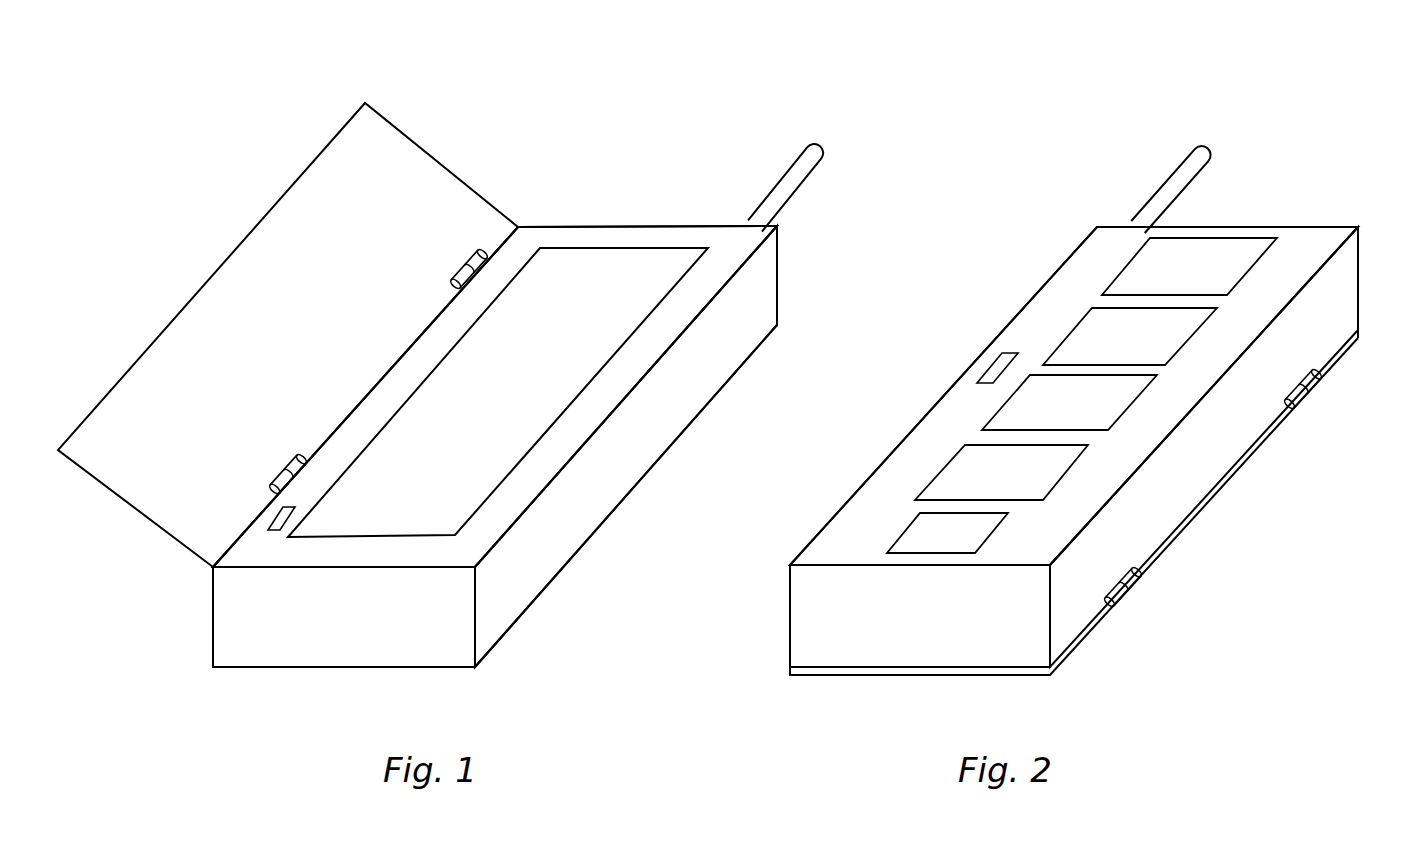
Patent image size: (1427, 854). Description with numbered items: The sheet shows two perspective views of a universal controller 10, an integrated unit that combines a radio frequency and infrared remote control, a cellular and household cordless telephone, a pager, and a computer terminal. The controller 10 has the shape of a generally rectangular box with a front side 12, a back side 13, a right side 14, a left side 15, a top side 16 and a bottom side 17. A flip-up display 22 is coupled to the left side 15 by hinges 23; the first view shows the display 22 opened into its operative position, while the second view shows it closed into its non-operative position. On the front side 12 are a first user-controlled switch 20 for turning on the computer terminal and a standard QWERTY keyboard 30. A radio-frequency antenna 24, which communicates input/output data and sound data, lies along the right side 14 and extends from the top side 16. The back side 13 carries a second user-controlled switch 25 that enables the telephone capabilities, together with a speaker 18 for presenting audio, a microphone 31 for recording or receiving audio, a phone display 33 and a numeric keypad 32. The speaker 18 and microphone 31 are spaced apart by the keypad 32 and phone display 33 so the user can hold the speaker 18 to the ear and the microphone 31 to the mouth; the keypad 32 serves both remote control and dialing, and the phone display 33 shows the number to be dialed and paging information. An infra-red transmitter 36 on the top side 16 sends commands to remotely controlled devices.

In FIG. 1, the universal controller 10 is at (380, 53).
In FIG. 2, the universal controller 10 is at (1300, 181).
In FIG. 1, the front side 12 is at (500, 520).
In FIG. 2, the back side 13 is at (845, 525).
In FIG. 1, the right side 14 is at (730, 350).
In FIG. 2, the left side 15 is at (1192, 490).
In FIG. 1, the top side 16 is at (778, 265).
In FIG. 2, the top side 16 is at (1358, 262).
In FIG. 1, the bottom side 17 is at (437, 652).
In FIG. 2, the speaker 18 is at (1130, 336).
In FIG. 1, the first user-controlled switch 20 is at (268, 523).
In FIG. 1, the flip-up display 22 is at (288, 335).
In FIG. 2, the flip-up display 22 is at (912, 676).
In FIG. 1, the hinges 23 is at (485, 248).
In FIG. 2, the hinges 23 is at (1305, 388).
In FIG. 1, the radio-frequency antenna 24 is at (792, 158).
In FIG. 2, the radio-frequency antenna 24 is at (1180, 163).
In FIG. 2, the second user-controlled switch 25 is at (995, 370).
In FIG. 1, the QWERTY keyboard 30 is at (498, 392).
In FIG. 2, the microphone 31 is at (947, 533).
In FIG. 2, the numeric keypad 32 is at (1069, 402).
In FIG. 2, the phone display 33 is at (1001, 472).
In FIG. 2, the infra-red transmitter 36 is at (1189, 266).